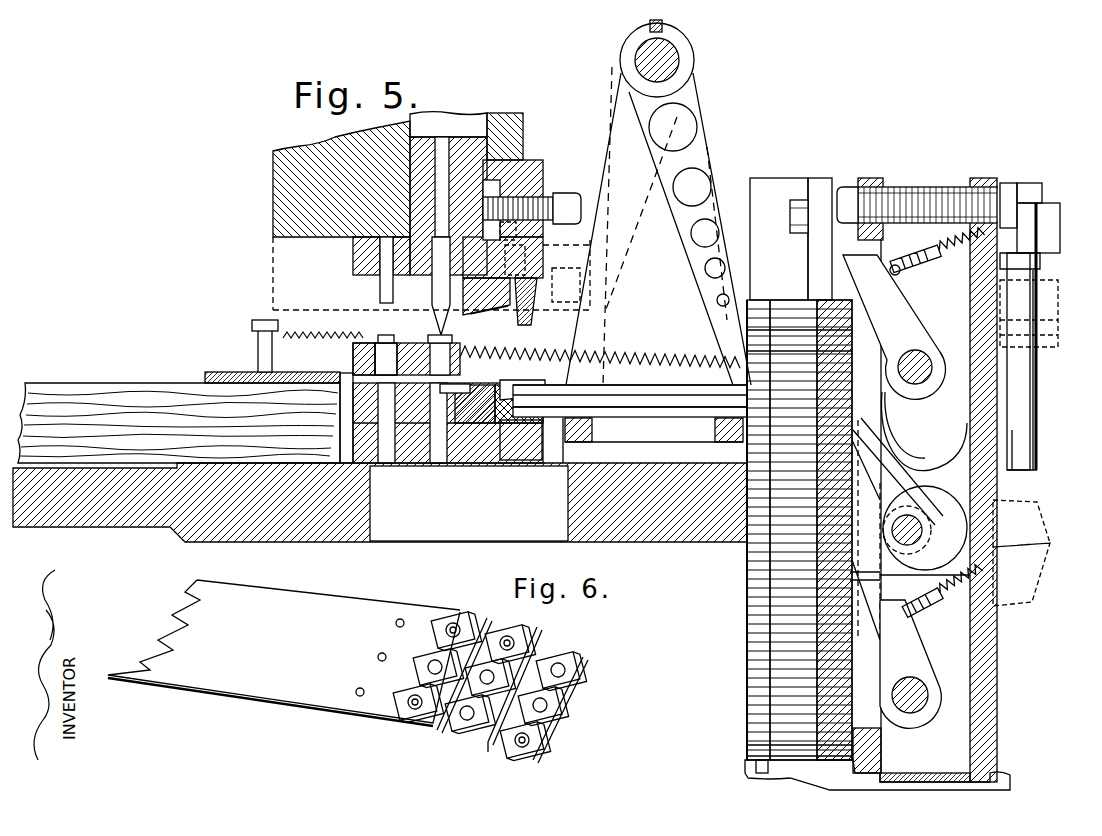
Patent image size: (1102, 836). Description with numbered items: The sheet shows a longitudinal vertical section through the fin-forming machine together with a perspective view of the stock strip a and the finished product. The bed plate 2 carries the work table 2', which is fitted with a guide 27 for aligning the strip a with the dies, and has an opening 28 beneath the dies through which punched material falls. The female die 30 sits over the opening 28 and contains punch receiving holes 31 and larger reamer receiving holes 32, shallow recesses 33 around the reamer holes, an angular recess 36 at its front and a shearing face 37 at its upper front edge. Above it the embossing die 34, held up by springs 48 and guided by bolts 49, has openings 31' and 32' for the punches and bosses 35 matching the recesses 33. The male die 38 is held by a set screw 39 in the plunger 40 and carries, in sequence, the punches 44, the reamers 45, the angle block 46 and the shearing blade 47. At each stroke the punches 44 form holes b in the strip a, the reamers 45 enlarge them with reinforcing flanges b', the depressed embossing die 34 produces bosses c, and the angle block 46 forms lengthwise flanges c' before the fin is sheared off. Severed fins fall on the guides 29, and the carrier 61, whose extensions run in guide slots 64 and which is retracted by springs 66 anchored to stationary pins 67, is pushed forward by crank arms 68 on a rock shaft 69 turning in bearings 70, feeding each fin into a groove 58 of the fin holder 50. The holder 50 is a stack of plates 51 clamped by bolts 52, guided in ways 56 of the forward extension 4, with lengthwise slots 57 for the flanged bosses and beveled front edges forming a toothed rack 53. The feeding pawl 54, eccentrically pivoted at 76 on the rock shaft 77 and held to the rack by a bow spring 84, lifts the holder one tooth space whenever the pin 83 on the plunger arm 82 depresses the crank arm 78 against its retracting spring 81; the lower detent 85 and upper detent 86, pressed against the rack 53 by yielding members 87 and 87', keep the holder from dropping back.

In FIG. 5, the bed plate 2 is at (380, 517).
In FIG. 5, the work table 2' is at (179, 408).
In FIG. 5, the forward extension 4 is at (855, 192).
In FIG. 5, the guide 27 is at (213, 372).
In FIG. 5, the opening 28 is at (438, 530).
In FIG. 5, the guides 29 is at (648, 395).
In FIG. 5, the female die 30 is at (475, 423).
In FIG. 5, the punch receiving holes 31 is at (382, 439).
In FIG. 5, the openings 31' is at (357, 359).
In FIG. 5, the reamer receiving holes 32 is at (443, 440).
In FIG. 5, the openings 32' is at (485, 307).
In FIG. 5, the shallow recesses 33 is at (400, 438).
In FIG. 5, the embossing die 34 is at (405, 358).
In FIG. 5, the bosses 35 is at (492, 316).
In FIG. 5, the angular recess 36 is at (505, 430).
In FIG. 5, the shearing face 37 is at (521, 381).
In FIG. 5, the male die 38 is at (464, 160).
In FIG. 5, the set screw 39 is at (549, 198).
In FIG. 5, the plunger 40 is at (273, 176).
In FIG. 5, the punches 44 is at (385, 305).
In FIG. 5, the reamers 45 is at (441, 320).
In FIG. 5, the angle block 46 is at (523, 305).
In FIG. 5, the shearing blade 47 is at (545, 300).
In FIG. 5, the springs 48 is at (455, 389).
In FIG. 5, the bolts 49 is at (362, 350).
In FIG. 5, the fin holder 50 is at (797, 302).
In FIG. 5, the metal plates 51 is at (848, 352).
In FIG. 5, the clamping bolts 52 is at (810, 240).
In FIG. 5, the toothed rack 53 is at (846, 556).
In FIG. 5, the feeding pawl 54 is at (866, 440).
In FIG. 5, the ways 56 is at (868, 210).
In FIG. 5, the lengthwise slots 57 is at (768, 690).
In FIG. 5, the grooves 58 is at (748, 580).
In FIG. 5, the carrier 61 is at (738, 412).
In FIG. 5, the guide slots 64 is at (672, 400).
In FIG. 5, the springs 66 is at (296, 333).
In FIG. 5, the stationary pins 67 is at (257, 326).
In FIG. 5, the crank arms 68 is at (697, 153).
In FIG. 5, the rock shaft 69 is at (672, 56).
In FIG. 5, the bearings 70 is at (665, 226).
In FIG. 5, the eccentric pivot 76 is at (907, 518).
In FIG. 5, the rock shaft 77 is at (950, 523).
In FIG. 5, the crank arm 78 is at (1050, 540).
In FIG. 5, the retracting spring 81 is at (955, 386).
In FIG. 5, the arm 82 is at (1060, 236).
In FIG. 5, the pin 83 is at (1024, 366).
In FIG. 5, the bow spring 84 is at (924, 431).
In FIG. 5, the lower detent 85 is at (908, 658).
In FIG. 5, the upper detent 86 is at (897, 315).
In FIG. 5, the yielding member 87 is at (943, 602).
In FIG. 5, the yielding member 87' is at (938, 264).
In FIG. 6, the stock strip a is at (238, 678).
In FIG. 6, the holes b is at (478, 688).
In FIG. 6, the reinforcing flanges b' is at (480, 670).
In FIG. 6, the bosses c is at (494, 695).
In FIG. 6, the flanges c' is at (513, 678).